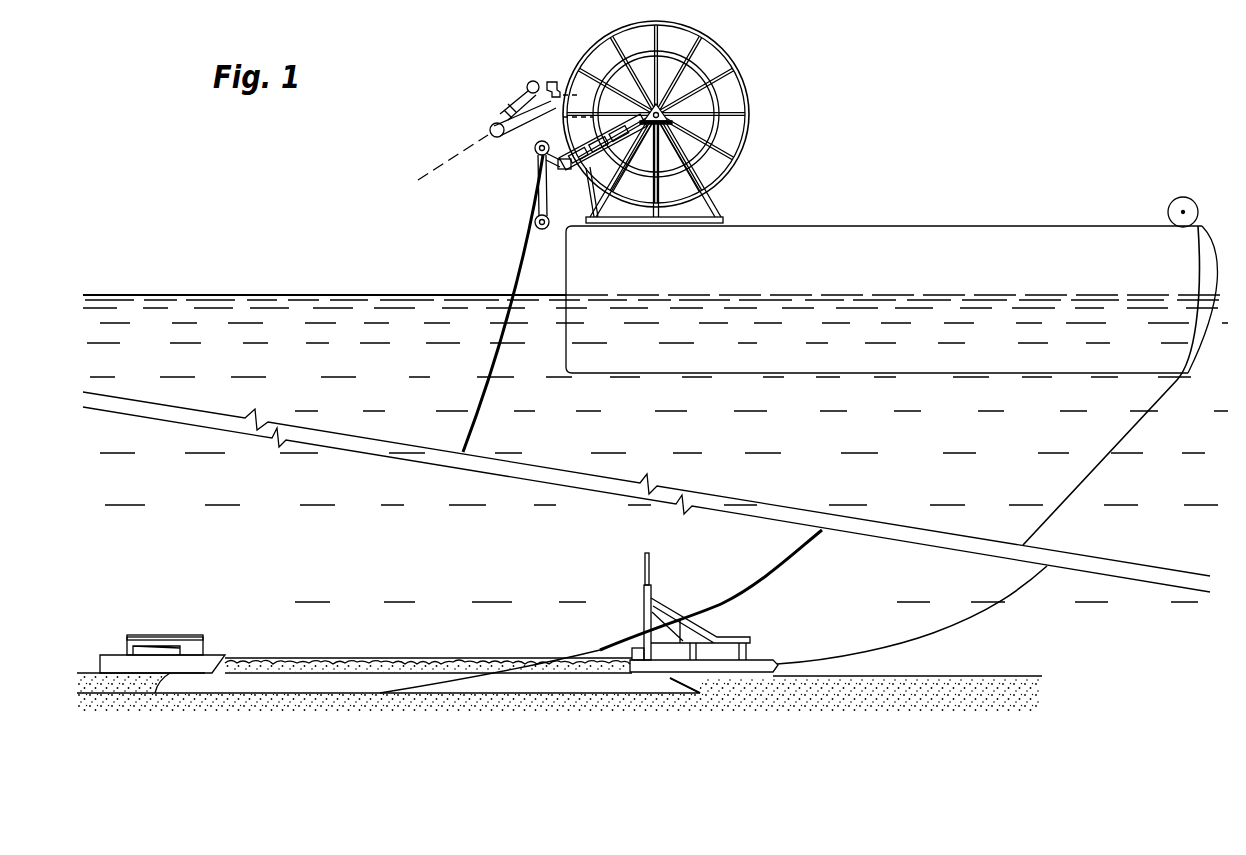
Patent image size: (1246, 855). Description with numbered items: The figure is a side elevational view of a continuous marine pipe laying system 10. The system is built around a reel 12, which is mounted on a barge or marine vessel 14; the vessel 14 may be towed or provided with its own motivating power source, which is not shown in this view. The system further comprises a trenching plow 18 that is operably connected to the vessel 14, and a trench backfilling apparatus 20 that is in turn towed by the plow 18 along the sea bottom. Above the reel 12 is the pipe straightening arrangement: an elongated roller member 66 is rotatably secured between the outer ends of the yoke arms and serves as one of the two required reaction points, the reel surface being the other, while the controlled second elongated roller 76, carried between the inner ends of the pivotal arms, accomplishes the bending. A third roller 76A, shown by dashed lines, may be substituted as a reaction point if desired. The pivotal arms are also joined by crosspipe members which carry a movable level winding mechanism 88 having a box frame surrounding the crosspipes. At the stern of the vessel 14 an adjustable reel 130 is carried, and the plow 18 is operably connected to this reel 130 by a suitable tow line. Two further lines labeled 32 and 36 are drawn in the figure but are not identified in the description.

The continuous marine pipe laying system 10 is at (318, 269).
The reel 12 is at (572, 40).
The barge or marine vessel 14 is at (882, 225).
The trenching plow 18 is at (745, 630).
The trench backfilling apparatus 20 is at (172, 626).
The tow cable 32 is at (1098, 471).
The cable 36 is at (495, 347).
The elongated roller member 66 is at (490, 129).
The second elongated roller 76 is at (522, 88).
The third roller 76A is at (552, 79).
The level winding mechanism 88 is at (528, 169).
The adjustable reel 130 is at (1170, 204).